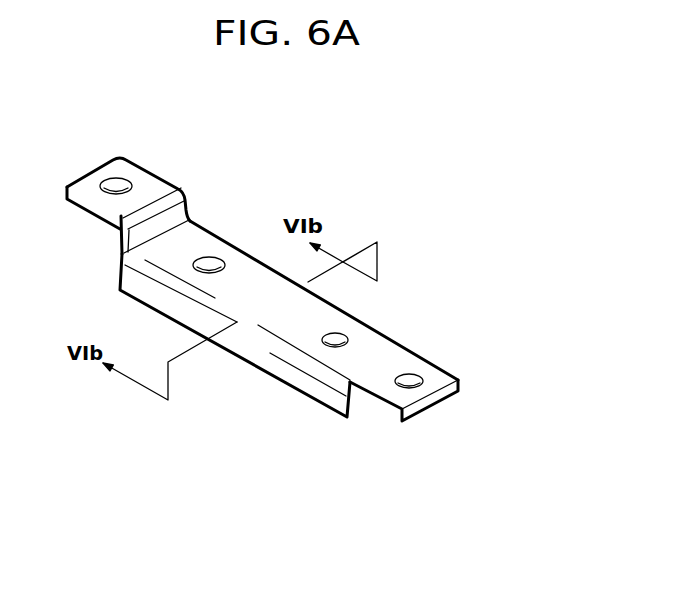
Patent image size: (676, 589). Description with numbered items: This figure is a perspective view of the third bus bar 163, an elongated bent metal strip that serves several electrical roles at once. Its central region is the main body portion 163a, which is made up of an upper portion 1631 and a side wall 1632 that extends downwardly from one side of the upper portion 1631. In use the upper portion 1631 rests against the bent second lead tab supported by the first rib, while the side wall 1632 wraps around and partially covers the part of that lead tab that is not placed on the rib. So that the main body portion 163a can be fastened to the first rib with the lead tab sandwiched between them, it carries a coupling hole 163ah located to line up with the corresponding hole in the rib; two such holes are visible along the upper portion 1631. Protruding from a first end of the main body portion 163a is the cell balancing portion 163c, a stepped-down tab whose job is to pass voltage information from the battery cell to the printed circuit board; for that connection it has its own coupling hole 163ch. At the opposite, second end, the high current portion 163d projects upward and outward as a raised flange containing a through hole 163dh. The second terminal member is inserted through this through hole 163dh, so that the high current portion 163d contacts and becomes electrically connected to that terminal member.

The third bus bar 163 is at (432, 238).
The main body portion 163a is at (328, 313).
The coupling hole 163ah is at (326, 348).
The cell balancing portion 163c is at (458, 376).
The coupling hole 163ch is at (412, 390).
The high current portion 163d is at (151, 183).
The through hole 163dh is at (112, 181).
The upper portion 1631 is at (253, 275).
The side wall 1632 is at (323, 398).